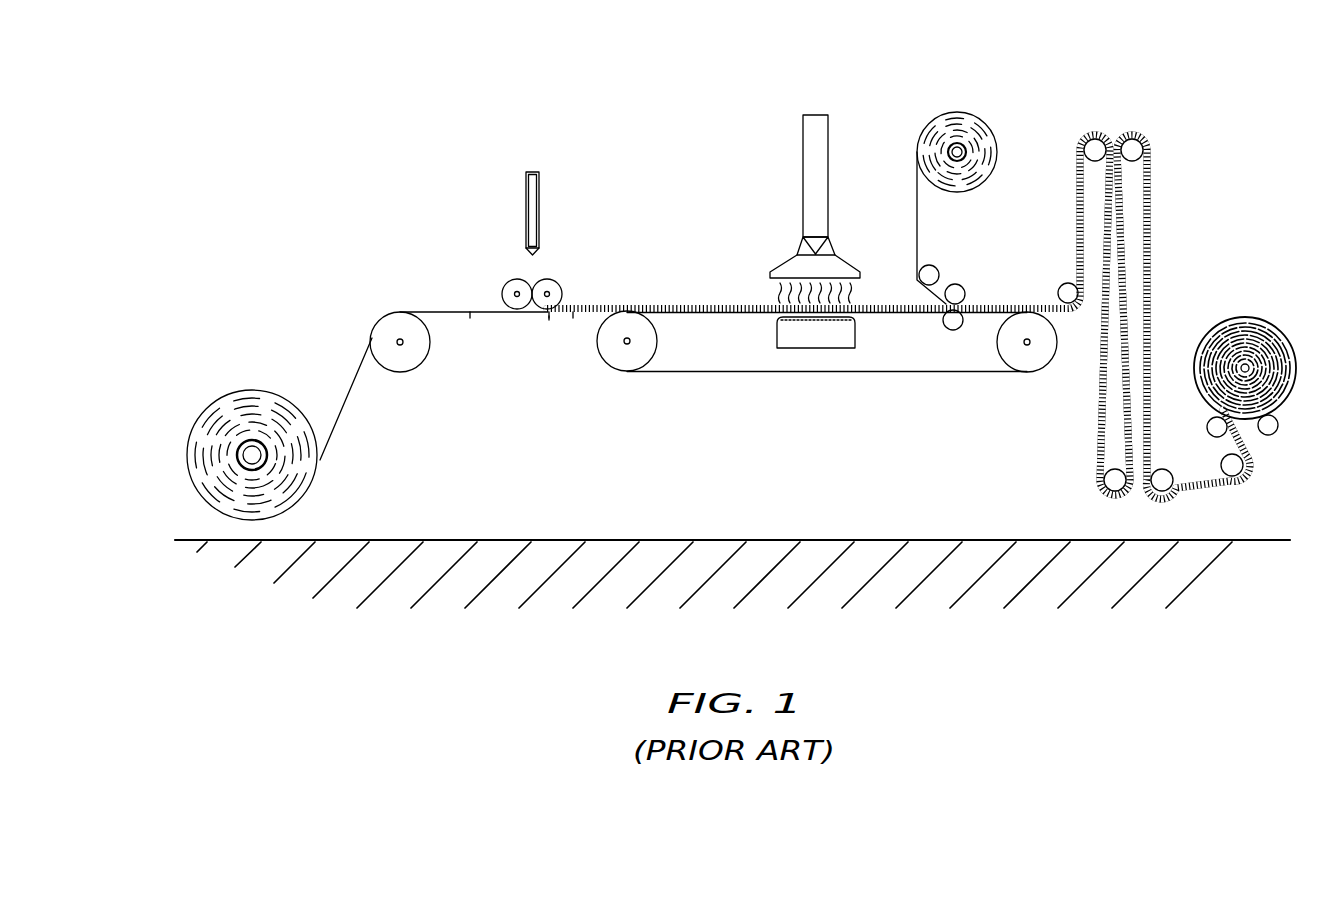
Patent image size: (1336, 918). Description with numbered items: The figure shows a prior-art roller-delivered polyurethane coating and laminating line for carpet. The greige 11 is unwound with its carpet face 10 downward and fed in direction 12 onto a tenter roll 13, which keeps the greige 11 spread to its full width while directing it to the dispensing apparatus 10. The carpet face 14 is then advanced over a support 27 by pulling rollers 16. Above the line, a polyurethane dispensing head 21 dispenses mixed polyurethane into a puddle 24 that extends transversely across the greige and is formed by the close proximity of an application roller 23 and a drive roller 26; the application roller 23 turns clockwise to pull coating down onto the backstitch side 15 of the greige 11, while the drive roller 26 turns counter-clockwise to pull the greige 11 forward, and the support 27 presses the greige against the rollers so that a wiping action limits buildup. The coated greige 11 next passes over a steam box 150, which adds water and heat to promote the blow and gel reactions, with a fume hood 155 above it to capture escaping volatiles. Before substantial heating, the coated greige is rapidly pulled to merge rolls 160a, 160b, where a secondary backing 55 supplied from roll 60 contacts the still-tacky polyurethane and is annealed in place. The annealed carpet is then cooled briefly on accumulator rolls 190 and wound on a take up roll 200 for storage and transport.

The polyurethane mixture dispensing apparatus 10 is at (578, 267).
The greige 11 is at (236, 390).
The direction 12 is at (438, 283).
The tenter roll 13 is at (418, 358).
The carpet face 14 is at (340, 447).
The backstitch side 15 is at (336, 370).
The pulling rollers 16 is at (632, 372).
The polyurethane dispensing head 21 is at (519, 187).
The application roller 23 is at (514, 279).
The puddle 24 is at (535, 287).
The drive roller 26 is at (562, 290).
The support 27 is at (550, 318).
The secondary backing 55 is at (915, 189).
The roll 60 is at (957, 110).
The steam box 150 is at (788, 338).
The fume hood 155 is at (800, 256).
The merge roll 160a is at (961, 285).
The merge roll 160b is at (951, 332).
The accumulator rolls 190 is at (1123, 120).
The take up roll 200 is at (1265, 320).